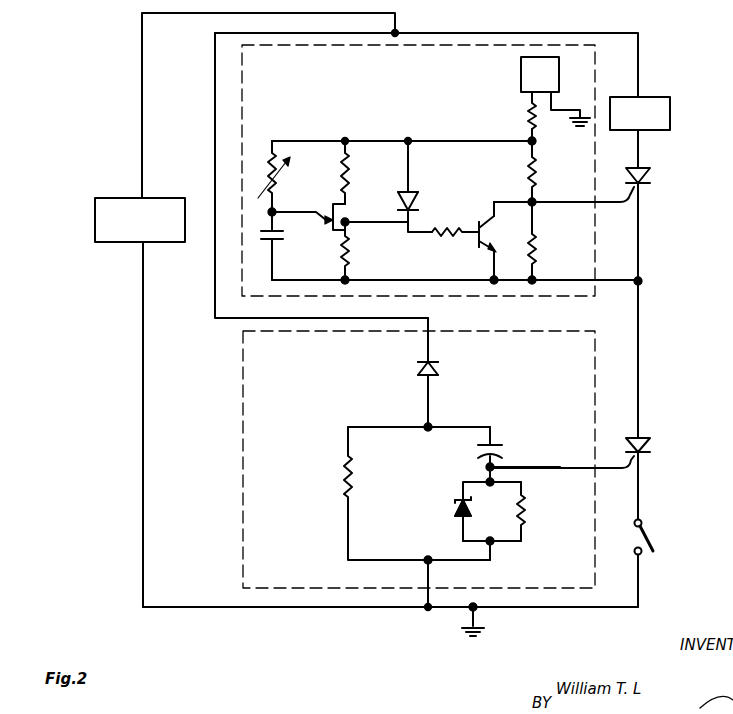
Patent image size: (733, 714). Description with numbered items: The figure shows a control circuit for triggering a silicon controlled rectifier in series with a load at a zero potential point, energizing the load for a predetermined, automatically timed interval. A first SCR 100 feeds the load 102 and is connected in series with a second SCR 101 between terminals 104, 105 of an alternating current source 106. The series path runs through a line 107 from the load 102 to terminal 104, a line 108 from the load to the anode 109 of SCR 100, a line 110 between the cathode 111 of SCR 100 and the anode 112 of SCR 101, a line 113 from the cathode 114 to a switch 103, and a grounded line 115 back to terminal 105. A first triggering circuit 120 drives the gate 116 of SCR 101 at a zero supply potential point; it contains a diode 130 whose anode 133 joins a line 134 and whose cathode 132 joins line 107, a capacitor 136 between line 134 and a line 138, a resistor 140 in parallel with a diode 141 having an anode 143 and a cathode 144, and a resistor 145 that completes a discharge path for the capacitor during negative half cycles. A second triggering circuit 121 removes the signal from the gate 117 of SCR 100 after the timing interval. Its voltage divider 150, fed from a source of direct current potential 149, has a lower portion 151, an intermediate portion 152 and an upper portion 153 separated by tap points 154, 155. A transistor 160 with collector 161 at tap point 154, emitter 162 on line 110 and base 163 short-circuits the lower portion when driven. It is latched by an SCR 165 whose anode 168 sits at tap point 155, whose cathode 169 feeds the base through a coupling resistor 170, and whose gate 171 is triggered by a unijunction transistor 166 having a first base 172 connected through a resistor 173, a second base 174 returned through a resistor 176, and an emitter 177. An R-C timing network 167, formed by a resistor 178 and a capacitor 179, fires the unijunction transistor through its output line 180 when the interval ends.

The first SCR 100 is at (660, 176).
The second SCR 101 is at (660, 445).
The load 102 is at (671, 113).
The switch 103 is at (658, 532).
The terminal 104 is at (144, 196).
The terminal 105 is at (141, 248).
The alternating current source 106 is at (95, 218).
The line 107 is at (643, 36).
The line 108 is at (642, 153).
The anode 109 is at (628, 175).
The line 110 is at (645, 242).
The cathode 111 is at (647, 188).
The anode 112 is at (645, 437).
The line 113 is at (645, 490).
The cathode 114 is at (648, 458).
The grounded line 115 is at (548, 608).
The gate 116 is at (629, 472).
The gate 117 is at (584, 209).
The first triggering circuit 120 is at (240, 451).
The second triggering circuit 121 is at (238, 92).
The diode 130 is at (455, 367).
The cathode 132 is at (418, 361).
The anode 133 is at (422, 378).
The line 134 is at (432, 404).
The capacitor 136 is at (500, 448).
The line 138 is at (552, 468).
The resistor 140 is at (529, 513).
The diode 141 is at (448, 514).
The anode 143 is at (460, 521).
The cathode 144 is at (460, 498).
The resistor 145 is at (353, 470).
The source of direct current potential 149 is at (521, 68).
The voltage divider 150 is at (509, 124).
The lower portion 151 is at (541, 246).
The intermediate portion 152 is at (541, 173).
The upper portion 153 is at (541, 118).
The tap point 154 is at (538, 208).
The tap point 155 is at (528, 145).
The transistor 160 is at (482, 197).
The collector 161 is at (503, 206).
The emitter 162 is at (488, 254).
The base 163 is at (474, 240).
The SCR 165 is at (410, 190).
The unijunction transistor 166 is at (326, 242).
The R-C timing network 167 is at (272, 138).
The anode 168 is at (420, 200).
The cathode 169 is at (400, 210).
The coupling resistor 170 is at (437, 232).
The gate 171 is at (383, 242).
The first base 172 is at (333, 202).
The resistor 173 is at (349, 174).
The second base 174 is at (331, 225).
The resistor 176 is at (350, 256).
The emitter 177 is at (320, 212).
The resistor 178 is at (286, 178).
The capacitor 179 is at (262, 241).
The output line 180 is at (266, 216).